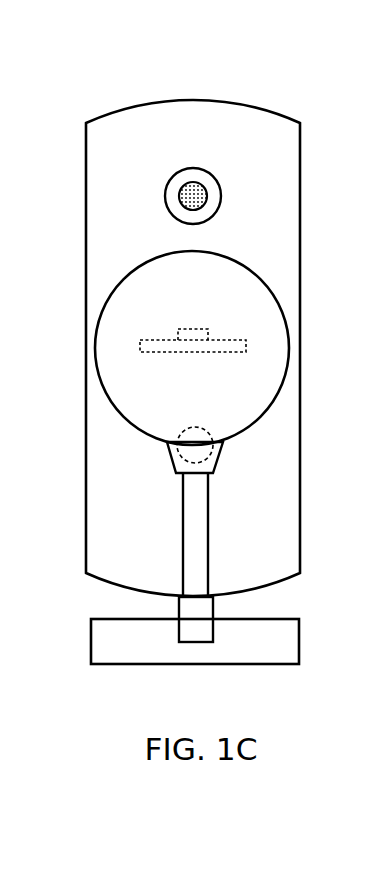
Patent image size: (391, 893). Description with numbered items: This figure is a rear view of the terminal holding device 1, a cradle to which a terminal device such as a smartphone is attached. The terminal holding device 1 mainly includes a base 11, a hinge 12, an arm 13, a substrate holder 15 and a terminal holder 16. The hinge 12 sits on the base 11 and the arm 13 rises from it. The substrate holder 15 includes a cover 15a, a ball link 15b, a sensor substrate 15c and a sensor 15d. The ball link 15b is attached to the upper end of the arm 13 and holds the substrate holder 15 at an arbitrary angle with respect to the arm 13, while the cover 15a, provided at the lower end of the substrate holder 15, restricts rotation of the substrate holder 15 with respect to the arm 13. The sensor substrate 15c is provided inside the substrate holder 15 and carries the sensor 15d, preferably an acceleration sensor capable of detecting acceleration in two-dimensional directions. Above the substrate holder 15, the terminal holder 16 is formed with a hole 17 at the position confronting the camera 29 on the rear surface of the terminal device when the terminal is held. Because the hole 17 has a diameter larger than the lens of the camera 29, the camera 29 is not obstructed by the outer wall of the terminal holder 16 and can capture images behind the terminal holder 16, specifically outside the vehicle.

The terminal holding device 1 is at (195, 93).
The base 11 is at (91, 643).
The hinge 12 is at (213, 607).
The arm 13 is at (208, 535).
The substrate holder 15 is at (243, 284).
The cover 15a is at (213, 463).
The ball link 15b is at (223, 442).
The sensor substrate 15c is at (248, 346).
The sensor 15d is at (205, 331).
The terminal holder 16 is at (296, 163).
The hole 17 is at (168, 215).
The camera 29 is at (181, 193).